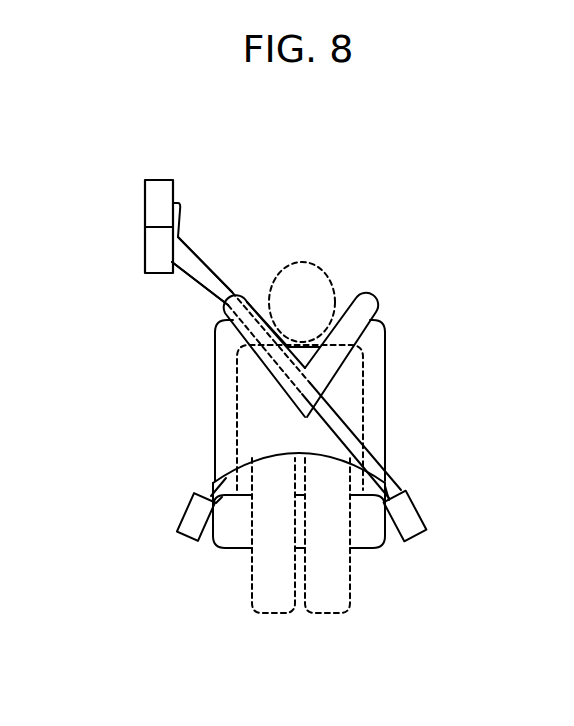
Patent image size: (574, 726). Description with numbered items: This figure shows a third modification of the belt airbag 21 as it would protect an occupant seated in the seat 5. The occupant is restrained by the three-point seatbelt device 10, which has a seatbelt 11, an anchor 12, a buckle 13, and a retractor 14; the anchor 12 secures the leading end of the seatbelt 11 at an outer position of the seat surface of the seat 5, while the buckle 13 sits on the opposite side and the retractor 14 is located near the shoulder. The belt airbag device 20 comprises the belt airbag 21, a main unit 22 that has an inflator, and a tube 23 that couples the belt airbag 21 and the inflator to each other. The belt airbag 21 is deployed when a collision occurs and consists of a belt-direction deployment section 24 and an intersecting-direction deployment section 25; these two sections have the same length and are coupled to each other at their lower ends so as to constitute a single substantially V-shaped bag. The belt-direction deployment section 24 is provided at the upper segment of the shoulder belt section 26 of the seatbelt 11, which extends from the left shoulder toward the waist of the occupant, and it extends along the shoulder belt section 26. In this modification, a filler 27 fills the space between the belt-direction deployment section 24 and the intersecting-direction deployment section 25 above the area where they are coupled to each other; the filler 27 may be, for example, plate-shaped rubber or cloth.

The seat 5 is at (383, 533).
The three-point seatbelt device 10 is at (280, 357).
The seatbelt 11 is at (286, 332).
The anchor 12 is at (197, 522).
The buckle 13 is at (407, 515).
The retractor 14 is at (152, 243).
The belt airbag device 20 is at (379, 262).
The belt airbag 21 is at (349, 355).
The main unit 22 is at (152, 205).
The tube 23 is at (198, 283).
The belt-direction deployment section 24 is at (298, 382).
The intersecting-direction deployment section 25 is at (330, 357).
The shoulder belt section 26 is at (183, 262).
The filler 27 is at (290, 356).